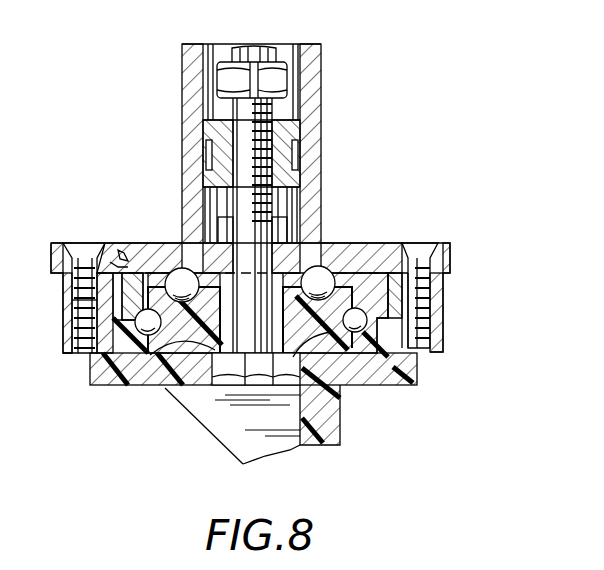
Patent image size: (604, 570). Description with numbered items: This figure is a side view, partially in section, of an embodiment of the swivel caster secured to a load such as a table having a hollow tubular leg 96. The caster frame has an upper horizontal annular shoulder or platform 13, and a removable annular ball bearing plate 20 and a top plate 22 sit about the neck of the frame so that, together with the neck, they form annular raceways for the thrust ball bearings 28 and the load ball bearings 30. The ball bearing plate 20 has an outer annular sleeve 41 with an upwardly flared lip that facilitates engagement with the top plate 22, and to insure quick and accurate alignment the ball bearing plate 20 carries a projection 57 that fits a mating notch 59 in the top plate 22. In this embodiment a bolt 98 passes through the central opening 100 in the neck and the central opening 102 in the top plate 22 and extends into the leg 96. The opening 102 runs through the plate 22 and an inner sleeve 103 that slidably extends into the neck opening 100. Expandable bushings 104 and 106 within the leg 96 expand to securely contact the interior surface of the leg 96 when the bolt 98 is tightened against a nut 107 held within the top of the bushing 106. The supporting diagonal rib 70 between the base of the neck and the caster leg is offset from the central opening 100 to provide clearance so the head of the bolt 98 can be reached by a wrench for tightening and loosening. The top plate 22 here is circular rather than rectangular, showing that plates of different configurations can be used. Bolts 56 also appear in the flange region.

The nut 107 is at (278, 70).
The hollow tubular leg 96 is at (321, 80).
The expandable bushing 106 is at (292, 130).
The expandable bushing 104 is at (312, 186).
The central opening 102 is at (272, 258).
The top plate 22 is at (394, 238).
The projection 57 is at (120, 265).
The mating notch 59 is at (112, 262).
The thrust ball bearings 28 is at (148, 309).
The load ball bearings 30 is at (181, 268).
The annular ball bearing plate 20 is at (58, 283).
The outer annular sleeve 41 is at (62, 310).
The bolt 56 is at (93, 320).
The platform 13 is at (107, 372).
The central opening 100 is at (178, 360).
The bolt 98 is at (213, 375).
The diagonal rib 70 is at (237, 443).
The inner sleeve 103 is at (341, 387).